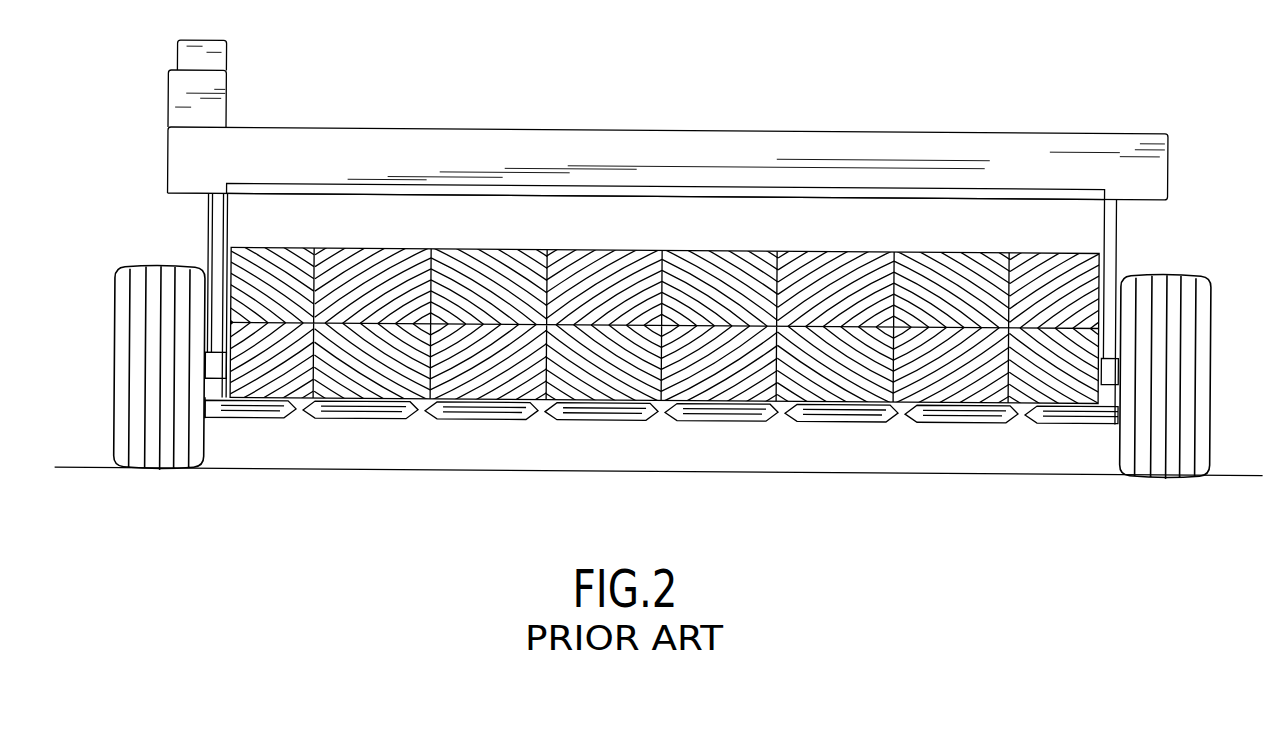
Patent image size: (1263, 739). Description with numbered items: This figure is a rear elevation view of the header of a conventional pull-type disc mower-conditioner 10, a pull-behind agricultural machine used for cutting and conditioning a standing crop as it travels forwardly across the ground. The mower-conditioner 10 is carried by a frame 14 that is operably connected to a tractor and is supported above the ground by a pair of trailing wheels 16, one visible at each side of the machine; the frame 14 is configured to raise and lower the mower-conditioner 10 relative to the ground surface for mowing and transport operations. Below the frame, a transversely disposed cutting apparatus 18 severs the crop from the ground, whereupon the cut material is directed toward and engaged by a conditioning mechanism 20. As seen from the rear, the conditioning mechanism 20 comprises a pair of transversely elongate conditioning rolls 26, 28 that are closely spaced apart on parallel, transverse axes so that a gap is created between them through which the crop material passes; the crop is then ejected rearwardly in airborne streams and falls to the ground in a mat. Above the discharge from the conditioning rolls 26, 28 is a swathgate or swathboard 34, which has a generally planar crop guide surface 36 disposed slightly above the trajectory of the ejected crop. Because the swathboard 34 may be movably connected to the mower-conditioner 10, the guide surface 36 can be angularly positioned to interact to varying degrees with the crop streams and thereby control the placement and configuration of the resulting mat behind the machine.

The mower-conditioner 10 is at (962, 82).
The frame 14 is at (434, 122).
The trailing wheels 16 is at (146, 282).
The cutting apparatus 18 is at (498, 446).
The conditioning mechanism 20 is at (228, 356).
The conditioning roll 26 is at (1072, 293).
The conditioning roll 28 is at (945, 368).
The swathboard 34 is at (673, 183).
The crop guide surface 36 is at (890, 198).